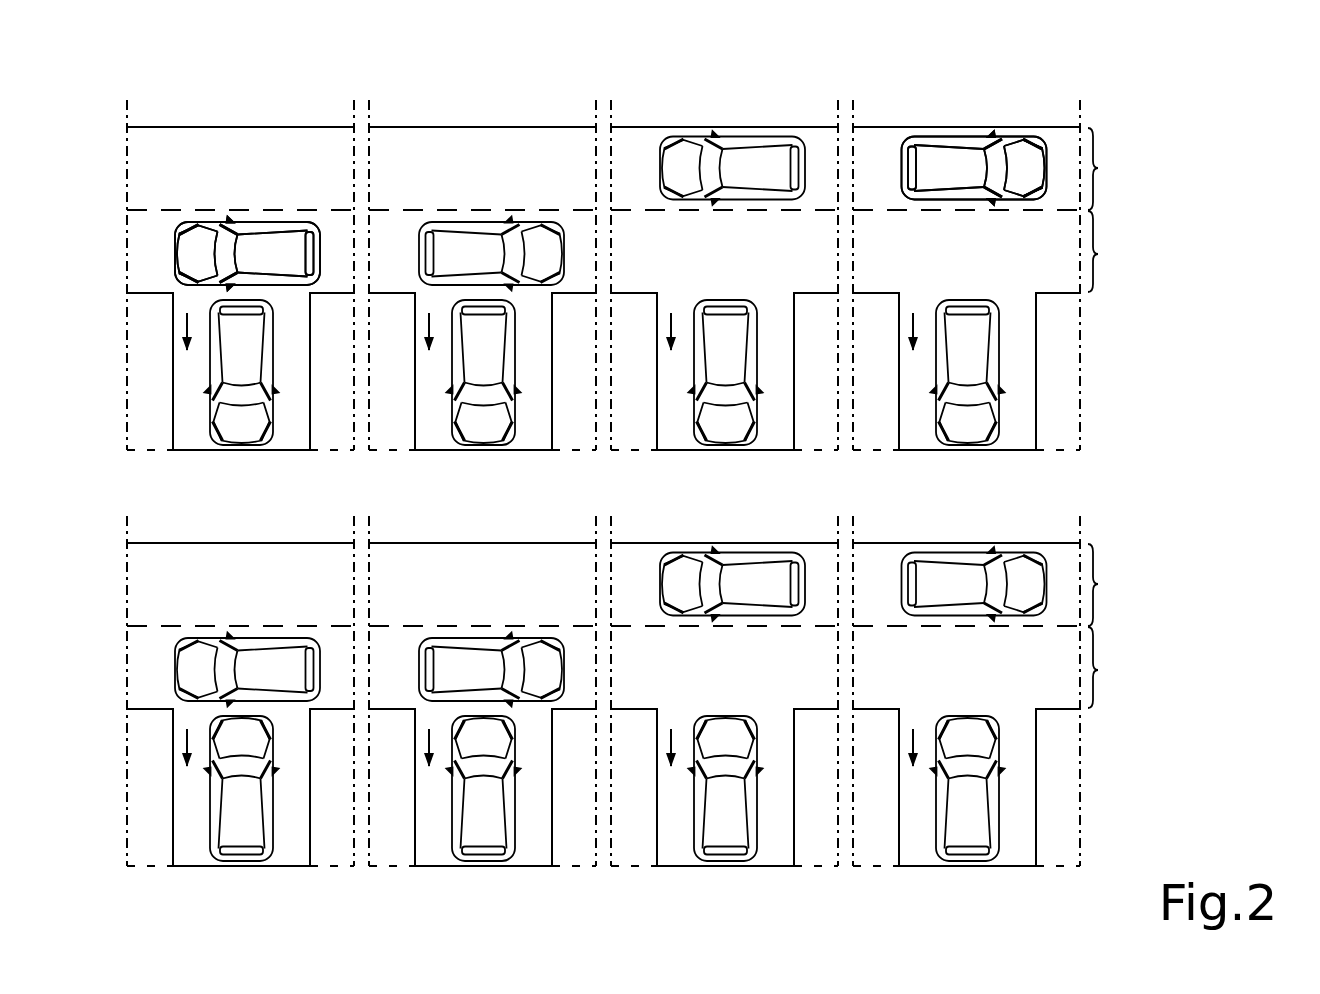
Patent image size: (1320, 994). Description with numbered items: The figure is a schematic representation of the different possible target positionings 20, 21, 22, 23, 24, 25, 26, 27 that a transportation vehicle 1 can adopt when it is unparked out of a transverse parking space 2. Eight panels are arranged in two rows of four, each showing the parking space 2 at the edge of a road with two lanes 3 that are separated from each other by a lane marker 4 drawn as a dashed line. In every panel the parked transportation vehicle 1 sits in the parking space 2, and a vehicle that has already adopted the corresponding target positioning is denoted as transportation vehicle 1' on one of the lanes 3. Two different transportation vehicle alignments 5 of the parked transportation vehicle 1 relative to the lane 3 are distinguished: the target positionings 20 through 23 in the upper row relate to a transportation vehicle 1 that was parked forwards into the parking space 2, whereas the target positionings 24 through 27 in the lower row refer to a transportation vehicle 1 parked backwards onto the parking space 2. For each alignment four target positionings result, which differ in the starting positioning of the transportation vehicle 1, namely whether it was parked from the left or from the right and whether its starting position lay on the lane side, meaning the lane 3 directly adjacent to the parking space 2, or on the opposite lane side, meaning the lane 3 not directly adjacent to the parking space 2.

The transportation vehicle 1 is at (653, 580).
The transportation vehicle in target positioning 1' is at (644, 356).
The parking space 2 is at (1026, 425).
The lane 3 is at (1103, 418).
The lane marker 4 is at (1016, 213).
The transportation vehicle alignment 5 is at (899, 328).
The target positioning 20 is at (970, 576).
The target positioning 21 is at (482, 232).
The target positioning 22 is at (724, 232).
The target positioning 23 is at (966, 232).
The target positioning 24 is at (240, 723).
The target positioning 25 is at (482, 723).
The target positioning 26 is at (724, 723).
The target positioning 27 is at (966, 723).